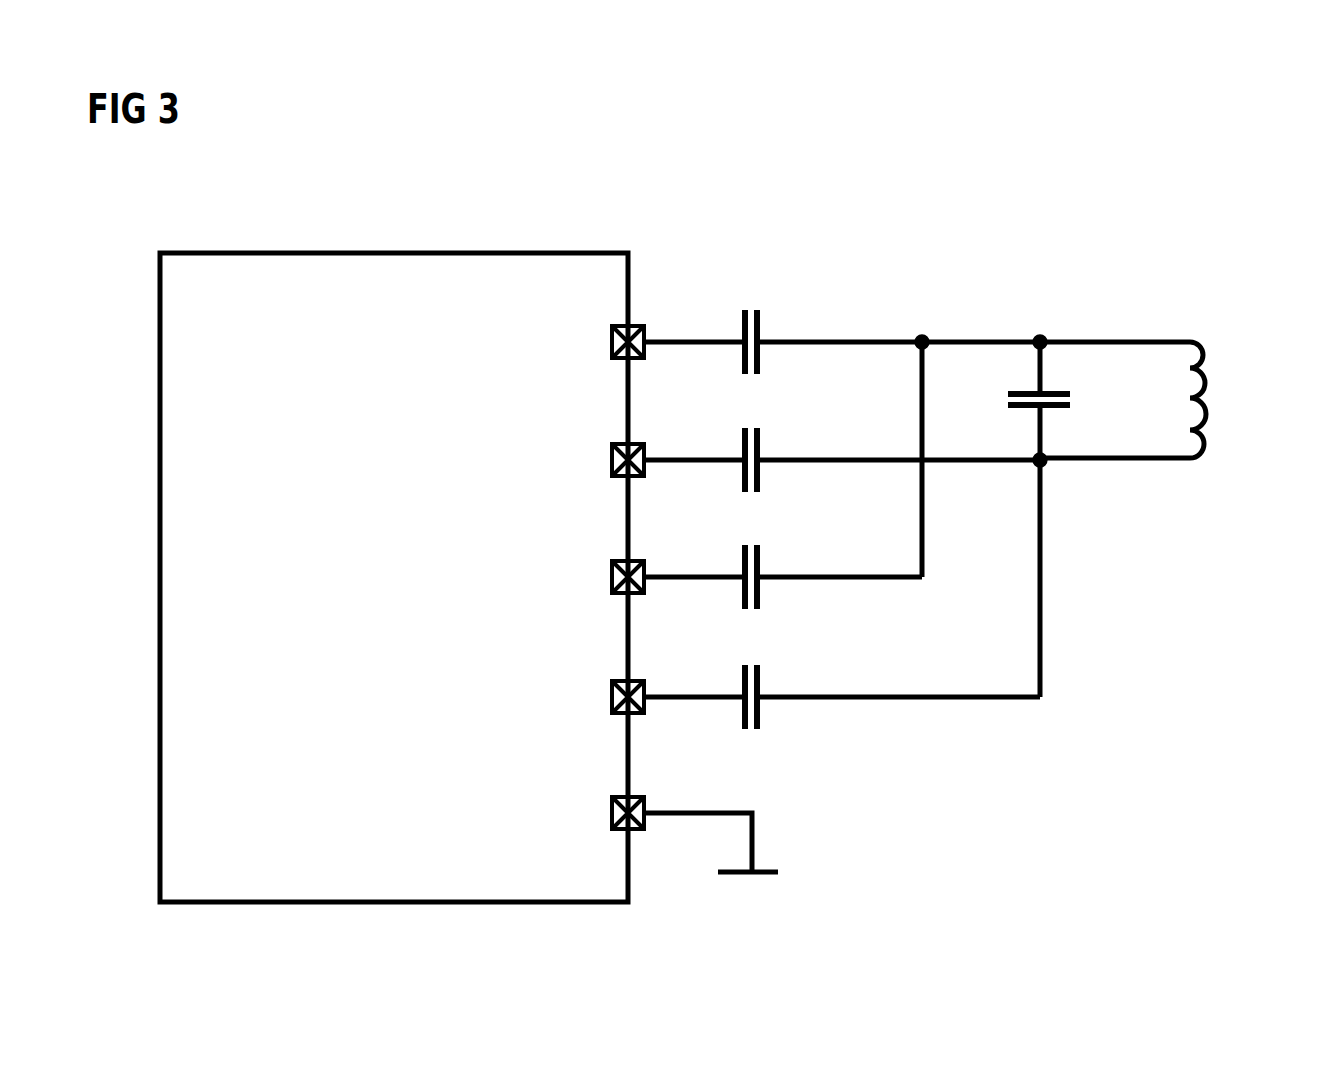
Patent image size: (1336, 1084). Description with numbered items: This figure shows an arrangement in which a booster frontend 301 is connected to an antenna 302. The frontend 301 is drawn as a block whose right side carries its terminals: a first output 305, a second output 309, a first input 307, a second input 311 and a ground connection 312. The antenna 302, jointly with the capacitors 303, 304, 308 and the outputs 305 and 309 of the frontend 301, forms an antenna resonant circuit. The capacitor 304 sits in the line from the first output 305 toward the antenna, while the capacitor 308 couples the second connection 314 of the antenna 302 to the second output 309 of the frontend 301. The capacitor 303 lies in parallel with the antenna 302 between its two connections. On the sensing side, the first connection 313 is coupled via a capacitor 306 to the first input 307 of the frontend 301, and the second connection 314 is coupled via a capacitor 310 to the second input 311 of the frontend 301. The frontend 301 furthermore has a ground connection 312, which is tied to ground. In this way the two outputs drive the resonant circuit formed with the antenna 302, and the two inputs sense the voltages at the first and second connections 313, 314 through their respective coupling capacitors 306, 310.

The frontend 301 is at (612, 252).
The antenna 302 is at (1203, 343).
The capacitor 303 is at (1014, 393).
The capacitor 304 is at (748, 308).
The output 305 is at (622, 324).
The capacitor 306 is at (750, 545).
The first input 307 is at (622, 560).
The capacitor 308 is at (750, 428).
The second output 309 is at (622, 442).
The capacitor 310 is at (750, 665).
The second input 311 is at (622, 680).
The ground connection 312 is at (622, 796).
The first connection 313 is at (1040, 340).
The second connection 314 is at (1048, 463).